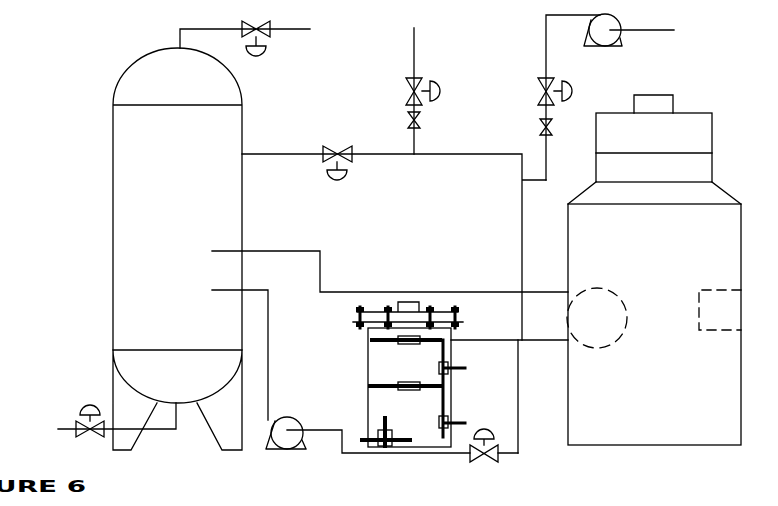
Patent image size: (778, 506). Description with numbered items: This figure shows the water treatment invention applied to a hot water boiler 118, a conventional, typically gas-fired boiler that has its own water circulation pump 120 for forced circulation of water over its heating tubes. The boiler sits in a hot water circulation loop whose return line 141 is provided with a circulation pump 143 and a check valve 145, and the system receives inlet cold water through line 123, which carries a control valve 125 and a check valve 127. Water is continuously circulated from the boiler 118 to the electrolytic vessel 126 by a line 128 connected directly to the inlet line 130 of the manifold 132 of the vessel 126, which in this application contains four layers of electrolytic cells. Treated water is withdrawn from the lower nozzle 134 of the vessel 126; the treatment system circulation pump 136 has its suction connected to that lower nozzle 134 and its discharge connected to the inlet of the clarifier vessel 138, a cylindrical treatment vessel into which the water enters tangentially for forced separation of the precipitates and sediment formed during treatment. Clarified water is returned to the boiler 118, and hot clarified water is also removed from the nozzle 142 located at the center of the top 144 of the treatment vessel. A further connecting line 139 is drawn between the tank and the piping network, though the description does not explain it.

The hot water boiler 118 is at (668, 420).
The water circulation pump 120 is at (715, 292).
The line 123 is at (410, 60).
The control valve 125 is at (412, 95).
The electrolytic vessel 126 is at (422, 425).
The check valve 127 is at (410, 120).
The line 128 is at (545, 340).
The inlet line 130 is at (402, 342).
The manifold 132 is at (447, 388).
The lower nozzle 134 is at (405, 443).
The treatment system circulation pump 136 is at (282, 424).
The clarifier vessel 138 is at (153, 322).
The line 139 is at (228, 248).
The line 141 is at (545, 62).
The nozzle 142 is at (178, 33).
The circulation pump 143 is at (613, 38).
The top 144 is at (150, 127).
The check valve 145 is at (540, 124).